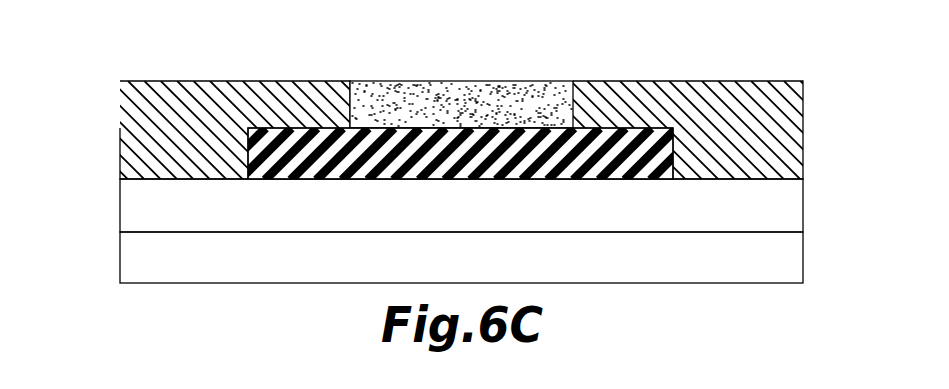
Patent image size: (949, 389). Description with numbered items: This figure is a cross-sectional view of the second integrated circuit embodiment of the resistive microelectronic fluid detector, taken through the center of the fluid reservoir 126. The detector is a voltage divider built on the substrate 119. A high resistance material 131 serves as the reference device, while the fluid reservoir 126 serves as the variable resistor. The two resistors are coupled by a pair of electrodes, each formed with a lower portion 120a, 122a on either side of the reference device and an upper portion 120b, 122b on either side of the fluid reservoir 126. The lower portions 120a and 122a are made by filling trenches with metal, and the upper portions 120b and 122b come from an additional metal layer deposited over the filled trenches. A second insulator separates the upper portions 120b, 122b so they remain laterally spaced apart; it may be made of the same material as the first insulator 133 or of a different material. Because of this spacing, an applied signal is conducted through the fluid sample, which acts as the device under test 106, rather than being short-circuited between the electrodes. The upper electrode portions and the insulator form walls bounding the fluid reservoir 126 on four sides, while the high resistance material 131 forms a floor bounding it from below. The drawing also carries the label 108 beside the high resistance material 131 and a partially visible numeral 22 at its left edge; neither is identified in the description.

The upper portion of first electrode 120b is at (150, 80).
The lower portion of first electrode 120a is at (165, 165).
The upper portion of second electrode 122b is at (776, 80).
The lower portion of second electrode 122a is at (750, 173).
The fluid reservoir 126 is at (461, 73).
The device under test 106 is at (403, 97).
The first insulator 133 is at (648, 157).
The high resistance material 131 is at (522, 205).
The substrate layer 108 is at (803, 203).
The substrate 119 is at (803, 258).
The partially visible reference numeral 22 is at (8, 88).